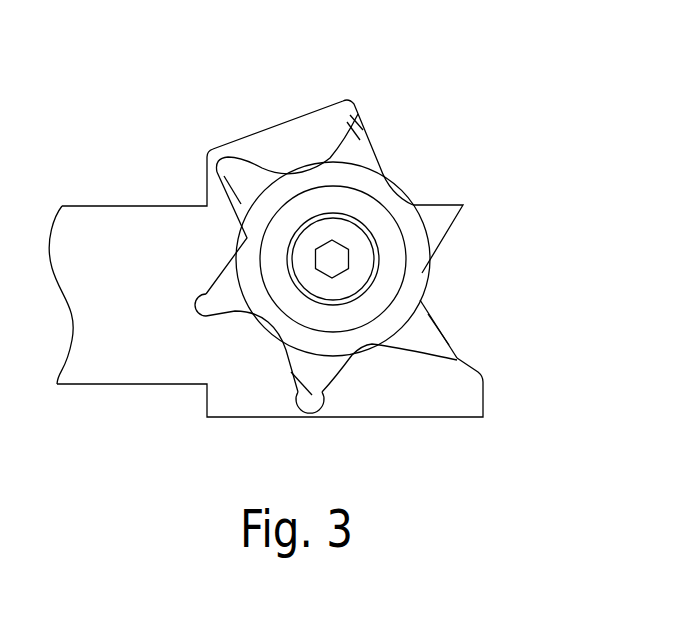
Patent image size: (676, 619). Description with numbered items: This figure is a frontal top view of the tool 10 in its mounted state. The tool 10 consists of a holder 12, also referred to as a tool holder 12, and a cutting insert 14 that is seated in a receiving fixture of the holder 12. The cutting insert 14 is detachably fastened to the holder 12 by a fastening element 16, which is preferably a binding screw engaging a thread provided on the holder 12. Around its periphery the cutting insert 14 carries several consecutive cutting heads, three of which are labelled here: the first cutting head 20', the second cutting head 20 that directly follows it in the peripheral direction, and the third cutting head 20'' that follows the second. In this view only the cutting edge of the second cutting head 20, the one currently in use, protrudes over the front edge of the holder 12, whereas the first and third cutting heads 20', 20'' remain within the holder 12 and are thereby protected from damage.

The tool 10 is at (428, 72).
The holder 12 is at (117, 350).
The cutting insert 14 is at (412, 278).
The fastening element 16 is at (345, 290).
The second cutting head 20 is at (374, 263).
The first cutting head 20' is at (408, 135).
The third cutting head 20'' is at (481, 329).